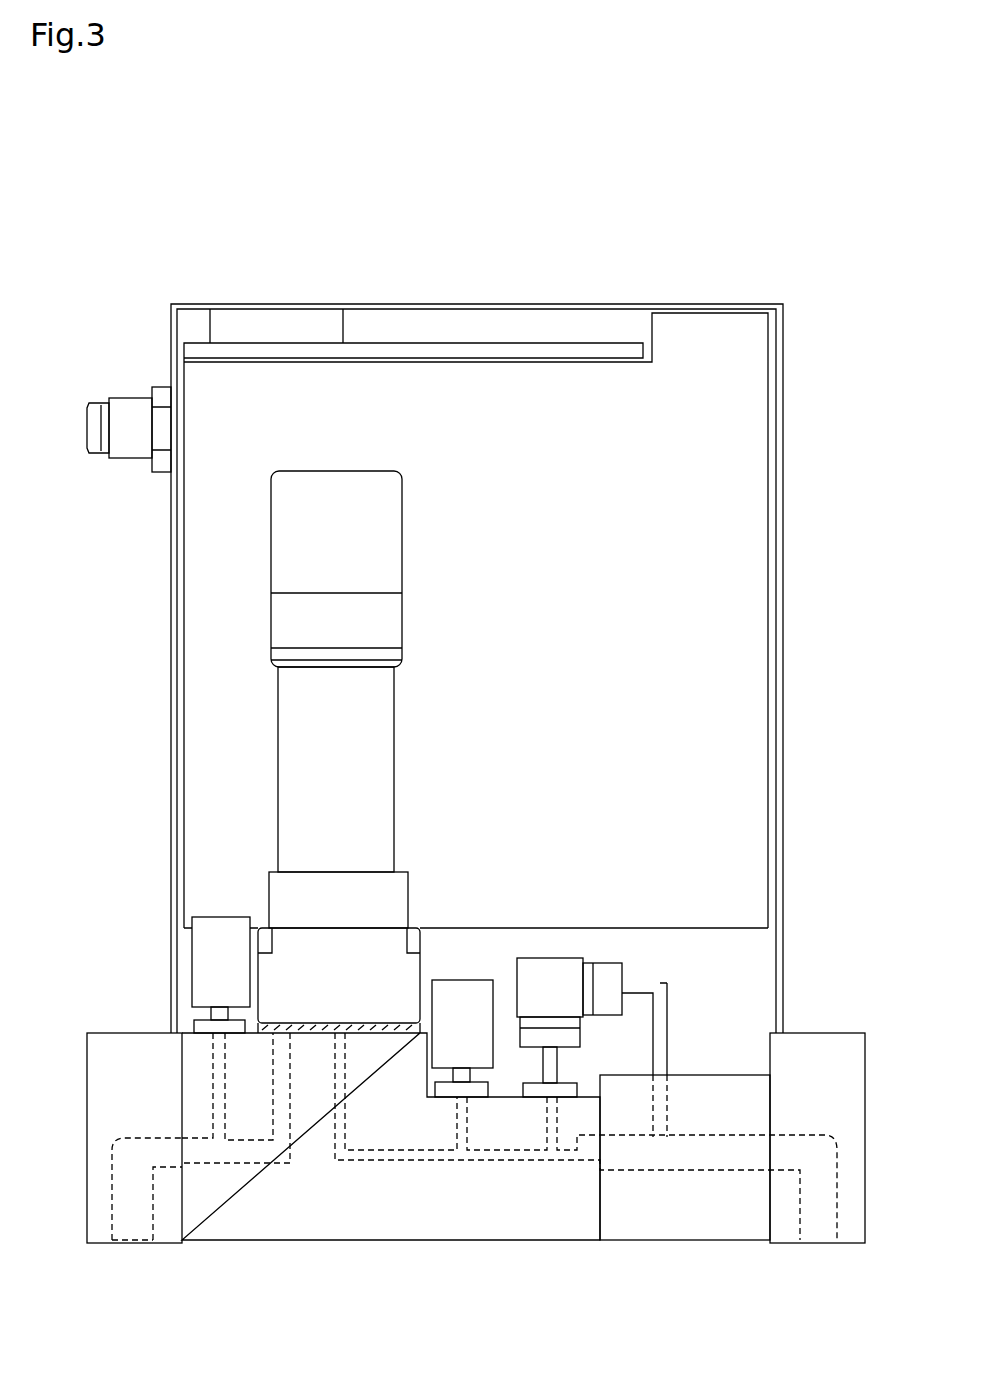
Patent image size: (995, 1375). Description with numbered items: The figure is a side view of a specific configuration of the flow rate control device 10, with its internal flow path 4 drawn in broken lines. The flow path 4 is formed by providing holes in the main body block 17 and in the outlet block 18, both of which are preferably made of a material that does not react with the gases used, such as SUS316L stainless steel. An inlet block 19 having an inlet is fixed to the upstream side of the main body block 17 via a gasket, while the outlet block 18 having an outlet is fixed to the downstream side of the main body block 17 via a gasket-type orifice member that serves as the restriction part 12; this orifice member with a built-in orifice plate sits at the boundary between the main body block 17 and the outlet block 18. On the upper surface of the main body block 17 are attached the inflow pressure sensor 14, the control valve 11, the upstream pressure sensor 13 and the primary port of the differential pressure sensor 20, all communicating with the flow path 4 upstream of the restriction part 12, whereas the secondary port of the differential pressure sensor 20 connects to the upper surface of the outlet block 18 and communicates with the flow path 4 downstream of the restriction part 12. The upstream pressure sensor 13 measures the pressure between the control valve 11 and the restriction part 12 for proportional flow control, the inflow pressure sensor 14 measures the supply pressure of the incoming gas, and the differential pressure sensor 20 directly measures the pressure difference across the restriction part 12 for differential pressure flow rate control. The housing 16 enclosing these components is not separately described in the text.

The flow rate control device 10 is at (805, 296).
The housing 16 is at (697, 685).
The control valve 11 is at (370, 729).
The inflow pressure sensor 14 is at (220, 980).
The upstream pressure sensor 13 is at (461, 998).
The differential pressure sensor 20 is at (550, 1000).
The main body block 17 is at (357, 1195).
The flow path 4 is at (267, 1152).
The restriction part 12 is at (578, 1162).
The outlet block 18 is at (683, 1193).
The inlet block 19 is at (103, 1217).